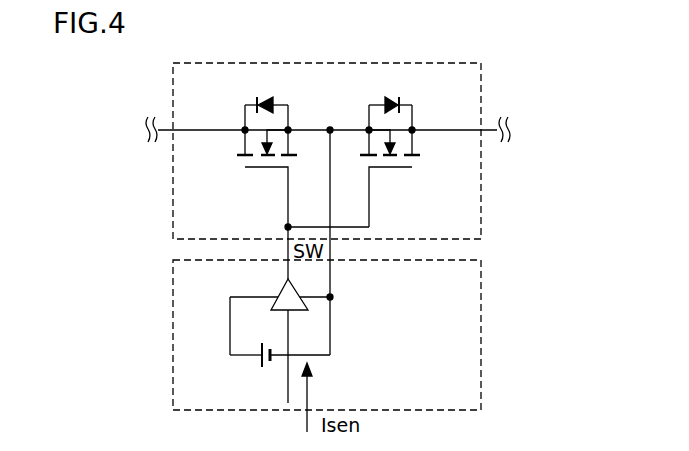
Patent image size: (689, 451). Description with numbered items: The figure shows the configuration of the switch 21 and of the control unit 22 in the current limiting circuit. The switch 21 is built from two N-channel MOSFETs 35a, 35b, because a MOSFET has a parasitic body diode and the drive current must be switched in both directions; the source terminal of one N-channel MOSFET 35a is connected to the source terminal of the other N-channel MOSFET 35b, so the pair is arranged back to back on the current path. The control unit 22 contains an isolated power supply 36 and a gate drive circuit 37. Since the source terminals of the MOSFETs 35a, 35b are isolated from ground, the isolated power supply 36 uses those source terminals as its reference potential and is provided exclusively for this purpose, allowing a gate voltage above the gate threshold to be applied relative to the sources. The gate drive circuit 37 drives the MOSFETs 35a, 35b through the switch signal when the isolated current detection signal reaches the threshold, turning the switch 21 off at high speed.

The switch 21 is at (482, 72).
The control unit 22 is at (482, 263).
The N-channel MOSFET 35a is at (249, 100).
The N-channel MOSFET 35b is at (408, 100).
The isolated power supply 36 is at (258, 362).
The gate drive circuit 37 is at (282, 284).